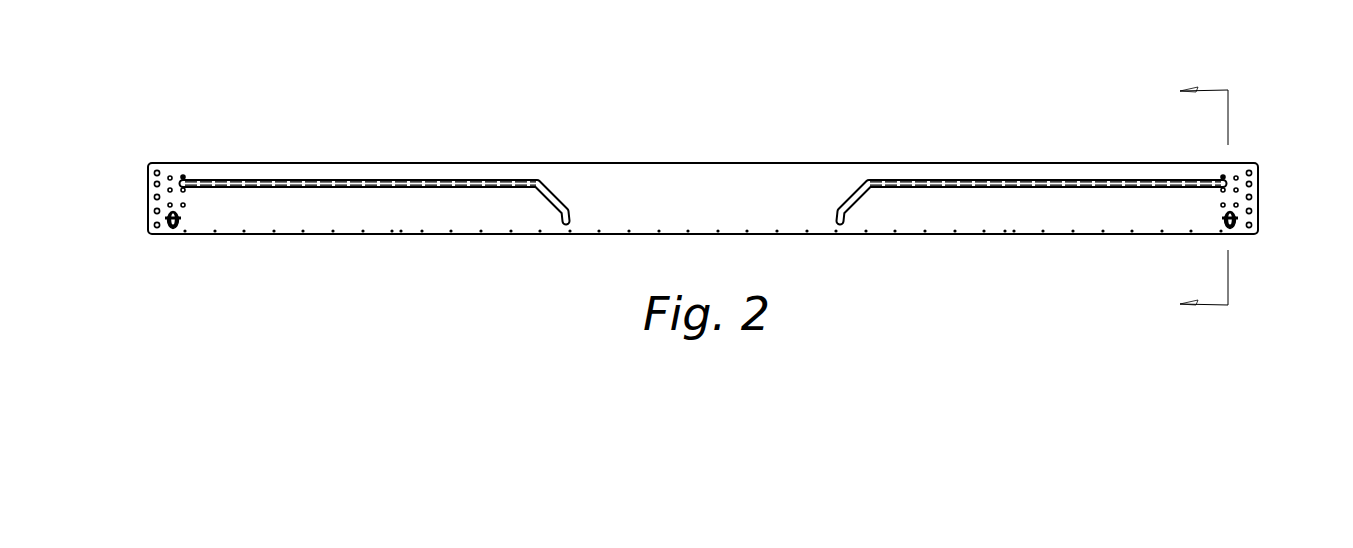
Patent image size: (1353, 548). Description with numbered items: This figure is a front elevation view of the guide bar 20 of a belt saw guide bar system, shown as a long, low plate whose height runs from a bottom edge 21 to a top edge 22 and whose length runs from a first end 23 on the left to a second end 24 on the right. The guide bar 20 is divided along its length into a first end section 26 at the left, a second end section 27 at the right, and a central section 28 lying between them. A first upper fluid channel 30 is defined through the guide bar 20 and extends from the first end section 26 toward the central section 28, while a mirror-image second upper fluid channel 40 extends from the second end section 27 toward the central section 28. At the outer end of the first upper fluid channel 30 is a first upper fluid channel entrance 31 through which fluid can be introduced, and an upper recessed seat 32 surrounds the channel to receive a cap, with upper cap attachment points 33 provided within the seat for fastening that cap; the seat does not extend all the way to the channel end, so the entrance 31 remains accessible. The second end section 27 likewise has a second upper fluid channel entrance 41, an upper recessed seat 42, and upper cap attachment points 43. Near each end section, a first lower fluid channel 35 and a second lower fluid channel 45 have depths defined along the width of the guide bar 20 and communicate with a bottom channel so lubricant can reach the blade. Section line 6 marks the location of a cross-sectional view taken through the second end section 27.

The guide bar 20 is at (1005, 125).
The bottom edge 21 is at (530, 237).
The top edge 22 is at (598, 163).
The first end 23 is at (145, 203).
The second end 24 is at (1260, 200).
The first end section 26 is at (250, 160).
The second end section 27 is at (1128, 160).
The central section 28 is at (700, 160).
The first upper fluid channel 30 is at (410, 167).
The first upper fluid channel entrance 31 is at (182, 163).
The upper recessed seat 32 is at (510, 172).
The upper cap attachment points 33 is at (305, 190).
The first lower fluid channel 35 is at (172, 236).
The second upper fluid channel 40 is at (950, 167).
The second upper fluid channel entrance 41 is at (1238, 163).
The upper recessed seat 42 is at (988, 190).
The upper cap attachment points 43 is at (1055, 190).
The second lower fluid channel 45 is at (1238, 236).
The section line 6- 6 is at (1189, 198).